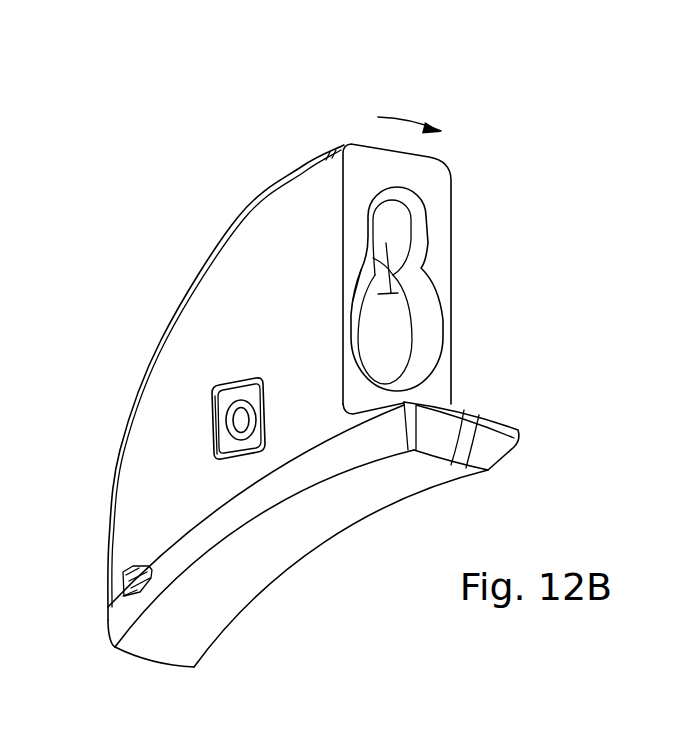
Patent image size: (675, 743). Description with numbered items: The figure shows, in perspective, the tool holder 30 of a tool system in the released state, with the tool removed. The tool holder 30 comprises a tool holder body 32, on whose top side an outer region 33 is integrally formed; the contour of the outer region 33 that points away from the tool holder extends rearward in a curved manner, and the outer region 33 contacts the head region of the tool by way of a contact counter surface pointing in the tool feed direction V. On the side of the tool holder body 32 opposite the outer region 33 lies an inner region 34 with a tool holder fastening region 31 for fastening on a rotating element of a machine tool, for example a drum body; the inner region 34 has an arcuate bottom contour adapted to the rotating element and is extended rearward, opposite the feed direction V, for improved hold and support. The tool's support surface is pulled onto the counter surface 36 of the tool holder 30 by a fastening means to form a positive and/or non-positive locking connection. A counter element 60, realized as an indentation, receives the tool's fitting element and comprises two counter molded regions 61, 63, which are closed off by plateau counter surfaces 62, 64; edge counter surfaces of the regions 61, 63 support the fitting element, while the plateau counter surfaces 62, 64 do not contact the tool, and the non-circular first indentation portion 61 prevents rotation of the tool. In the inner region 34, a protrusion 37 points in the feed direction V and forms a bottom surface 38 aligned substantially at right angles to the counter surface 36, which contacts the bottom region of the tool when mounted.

The tool holder 30 is at (160, 255).
The tool holder fastening region 31 is at (347, 505).
The tool holder body 32 is at (232, 390).
The outer region 33 is at (237, 217).
The inner region 34 is at (125, 582).
The counter surface 36 is at (433, 195).
The protrusion 37 is at (498, 435).
The bottom surface 38 is at (490, 418).
The counter element 60 is at (412, 311).
The first counter molded region 61 is at (378, 188).
The plateau counter surface 62 is at (378, 260).
The second counter molded region 63 is at (362, 278).
The plateau counter surface 64 is at (370, 357).
The tool feed direction V is at (421, 133).